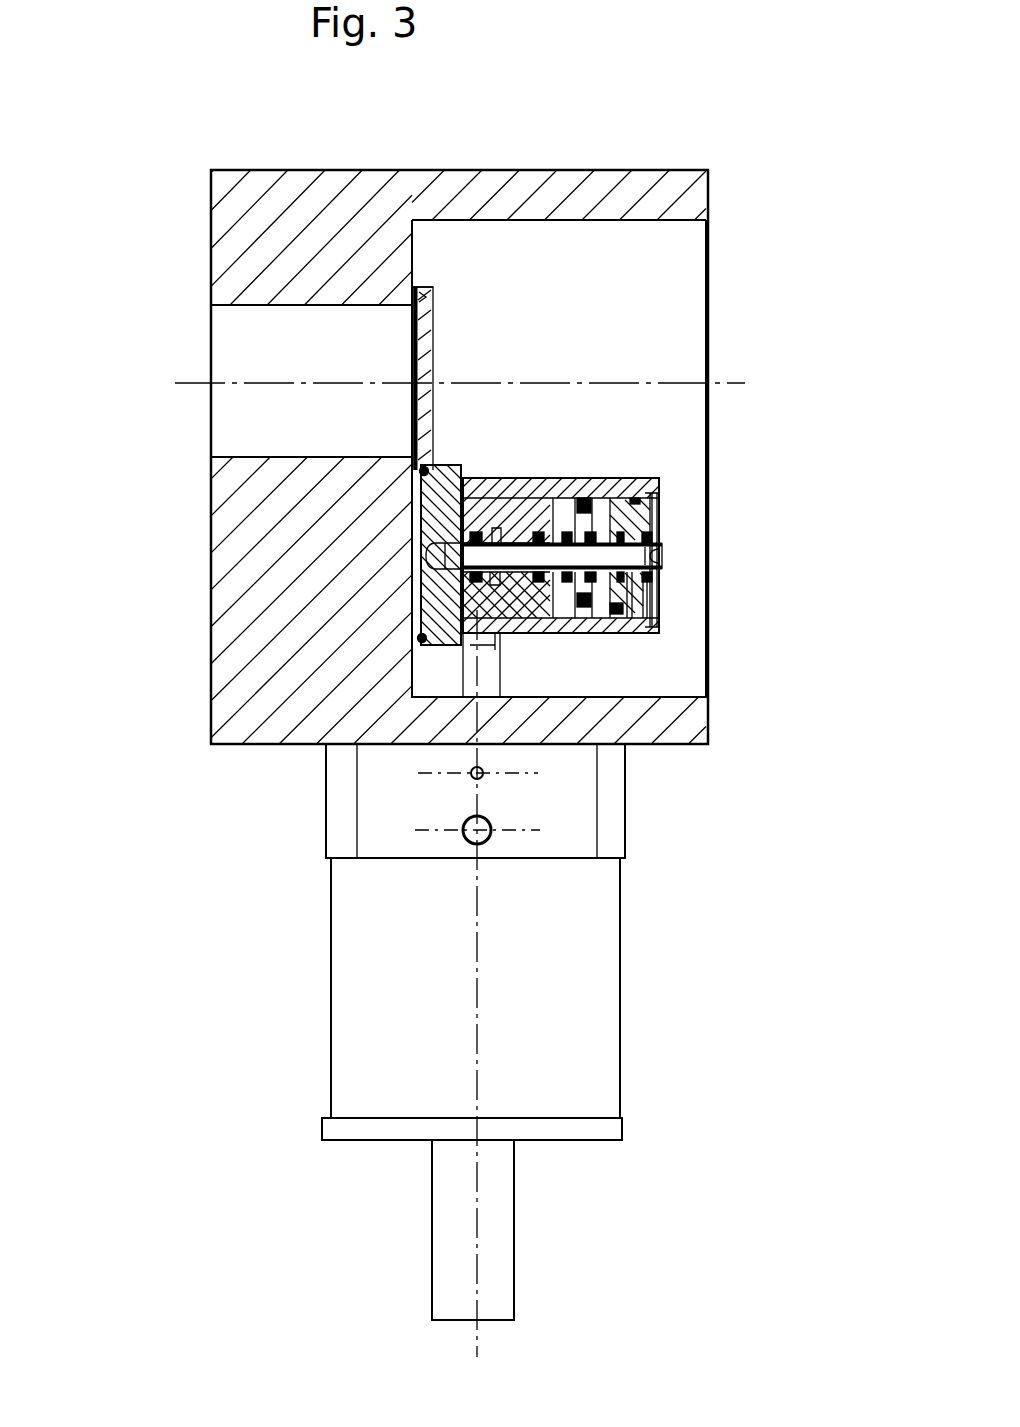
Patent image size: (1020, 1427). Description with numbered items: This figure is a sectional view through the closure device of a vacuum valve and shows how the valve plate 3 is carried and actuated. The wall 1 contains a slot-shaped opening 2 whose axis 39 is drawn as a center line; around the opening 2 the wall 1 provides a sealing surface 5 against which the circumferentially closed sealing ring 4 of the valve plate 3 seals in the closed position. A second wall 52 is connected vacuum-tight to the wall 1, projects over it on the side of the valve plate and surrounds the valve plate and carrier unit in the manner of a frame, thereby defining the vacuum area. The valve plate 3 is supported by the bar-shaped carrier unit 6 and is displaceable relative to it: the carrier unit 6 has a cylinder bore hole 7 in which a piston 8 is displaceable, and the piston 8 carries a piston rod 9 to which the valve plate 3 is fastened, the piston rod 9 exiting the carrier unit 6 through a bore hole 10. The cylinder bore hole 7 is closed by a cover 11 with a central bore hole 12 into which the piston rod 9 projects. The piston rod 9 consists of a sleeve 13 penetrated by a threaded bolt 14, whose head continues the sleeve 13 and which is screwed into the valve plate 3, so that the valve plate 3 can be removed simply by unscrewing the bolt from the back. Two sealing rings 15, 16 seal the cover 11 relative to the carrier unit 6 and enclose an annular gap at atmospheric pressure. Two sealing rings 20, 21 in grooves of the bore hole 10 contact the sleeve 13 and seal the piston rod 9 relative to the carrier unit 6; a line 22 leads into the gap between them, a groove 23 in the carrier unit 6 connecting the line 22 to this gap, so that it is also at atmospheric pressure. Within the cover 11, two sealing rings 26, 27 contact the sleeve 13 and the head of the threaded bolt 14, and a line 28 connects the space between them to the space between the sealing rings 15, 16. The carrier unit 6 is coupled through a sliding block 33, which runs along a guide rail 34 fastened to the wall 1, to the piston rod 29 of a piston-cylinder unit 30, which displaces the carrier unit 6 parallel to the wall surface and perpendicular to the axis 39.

The wall 1 is at (280, 200).
The opening 2 is at (245, 342).
The valve plate 3 is at (425, 515).
The sealing ring 4 is at (400, 677).
The sealing surface 5 is at (412, 294).
The carrier unit 6 is at (512, 468).
The cylinder bore hole 7 is at (585, 498).
The piston 8 is at (652, 500).
The piston rod 9 is at (527, 530).
The bore hole 10 is at (565, 636).
The cover 11 is at (660, 607).
The central bore hole 12 is at (670, 557).
The sleeve 13 is at (553, 500).
The threaded bolt 14 is at (425, 578).
The sealing ring 15 is at (638, 496).
The sealing ring 16 is at (660, 480).
The sealing ring 20 is at (592, 633).
The sealing ring 21 is at (585, 640).
The line 22 is at (590, 645).
The groove 23 is at (505, 527).
The sealing ring 26 is at (650, 528).
The sealing ring 27 is at (648, 540).
The line 28 is at (662, 592).
The piston rod 29 is at (465, 697).
The piston-cylinder unit 30 is at (268, 1068).
The sliding block 33 is at (435, 672).
The guide rail 34 is at (427, 310).
The axis 39 is at (255, 383).
The wall 52 is at (628, 186).